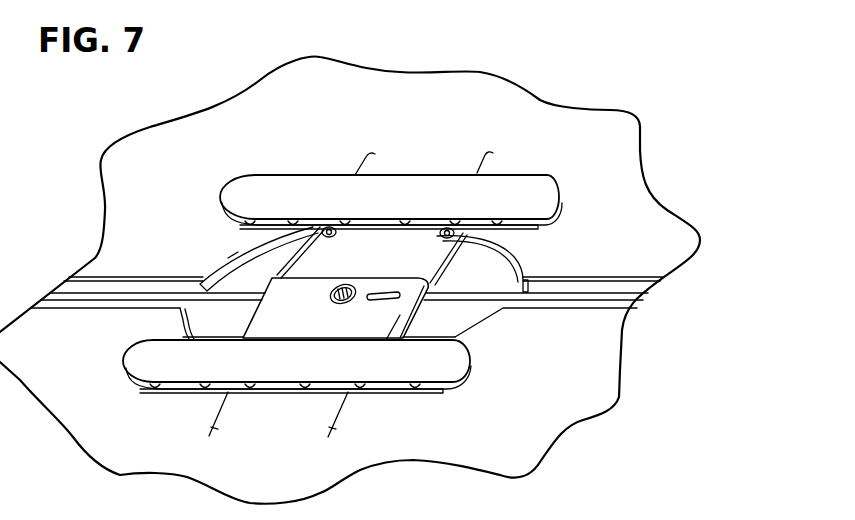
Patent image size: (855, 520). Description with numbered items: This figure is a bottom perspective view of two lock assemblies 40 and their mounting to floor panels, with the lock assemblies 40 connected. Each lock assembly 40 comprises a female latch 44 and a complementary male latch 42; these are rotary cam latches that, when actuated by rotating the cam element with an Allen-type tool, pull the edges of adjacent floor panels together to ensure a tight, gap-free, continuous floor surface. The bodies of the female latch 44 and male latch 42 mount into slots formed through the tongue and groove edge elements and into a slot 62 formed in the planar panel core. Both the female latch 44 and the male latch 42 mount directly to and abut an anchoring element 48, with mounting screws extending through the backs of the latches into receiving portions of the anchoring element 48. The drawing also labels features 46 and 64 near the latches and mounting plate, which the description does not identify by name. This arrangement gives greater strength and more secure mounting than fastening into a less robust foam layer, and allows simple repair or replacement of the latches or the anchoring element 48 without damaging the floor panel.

The lock assembly 40 is at (683, 149).
The male latch 42 is at (386, 314).
The female latch 44 is at (323, 265).
The fastener 46 is at (444, 231).
The anchoring element 48 is at (528, 190).
The slot 62 is at (508, 249).
The aperture 64 is at (329, 294).